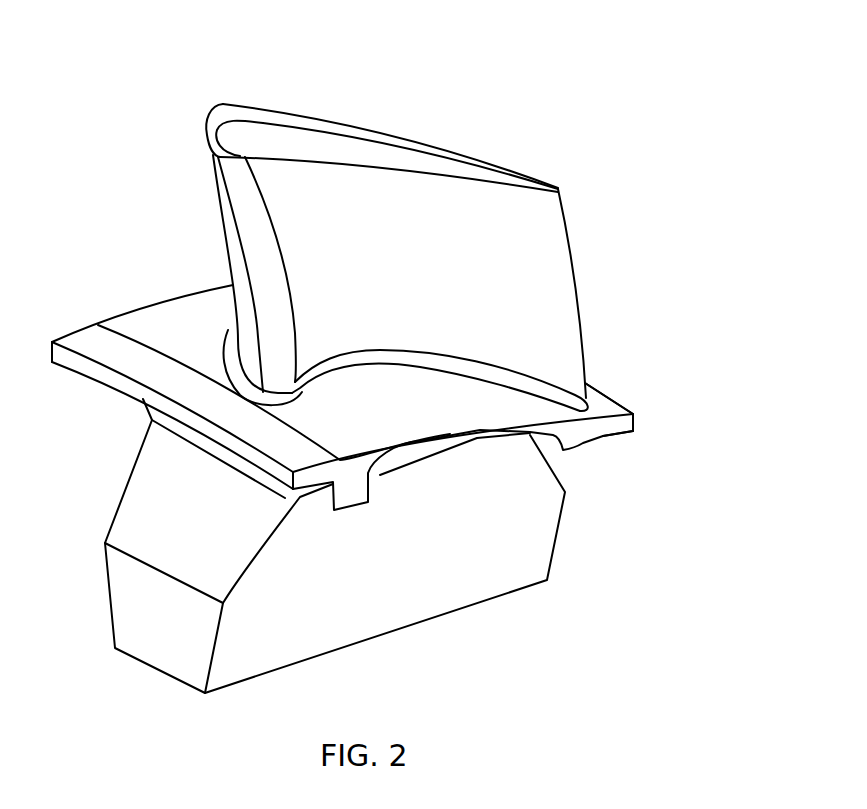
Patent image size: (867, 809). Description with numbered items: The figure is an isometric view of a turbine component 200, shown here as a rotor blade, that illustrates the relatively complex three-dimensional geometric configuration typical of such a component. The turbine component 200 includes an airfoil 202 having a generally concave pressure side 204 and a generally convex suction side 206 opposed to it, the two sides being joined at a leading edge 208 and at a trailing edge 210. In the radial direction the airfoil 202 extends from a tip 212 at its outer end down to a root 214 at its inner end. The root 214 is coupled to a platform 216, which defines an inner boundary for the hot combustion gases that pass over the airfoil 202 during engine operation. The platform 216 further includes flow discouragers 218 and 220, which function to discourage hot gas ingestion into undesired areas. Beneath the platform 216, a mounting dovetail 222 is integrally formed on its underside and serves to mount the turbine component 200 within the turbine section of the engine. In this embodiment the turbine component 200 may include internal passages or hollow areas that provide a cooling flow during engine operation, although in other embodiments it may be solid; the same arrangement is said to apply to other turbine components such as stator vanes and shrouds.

The turbine component 200 is at (627, 492).
The airfoil 202 is at (527, 162).
The pressure side 204 is at (425, 287).
The suction side 206 is at (238, 248).
The leading edge 208 is at (250, 333).
The trailing edge 210 is at (575, 250).
The tip 212 is at (404, 141).
The root 214 is at (386, 362).
The platform 216 is at (153, 312).
The flow discourager 218 is at (82, 344).
The flow discourager 220 is at (605, 392).
The mounting dovetail 222 is at (118, 622).